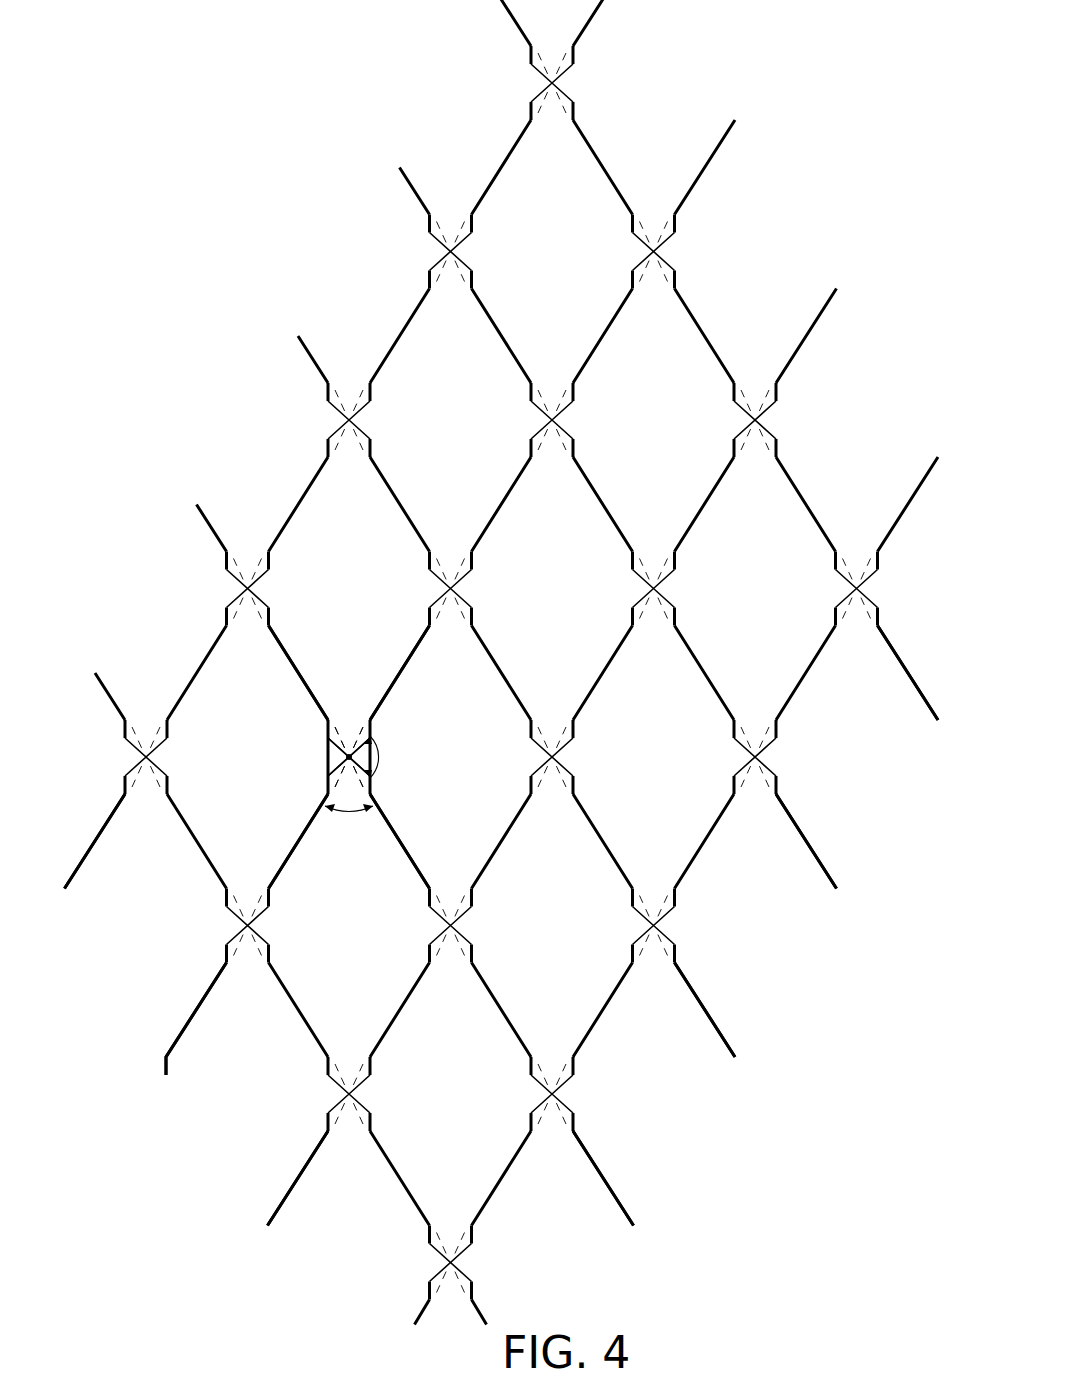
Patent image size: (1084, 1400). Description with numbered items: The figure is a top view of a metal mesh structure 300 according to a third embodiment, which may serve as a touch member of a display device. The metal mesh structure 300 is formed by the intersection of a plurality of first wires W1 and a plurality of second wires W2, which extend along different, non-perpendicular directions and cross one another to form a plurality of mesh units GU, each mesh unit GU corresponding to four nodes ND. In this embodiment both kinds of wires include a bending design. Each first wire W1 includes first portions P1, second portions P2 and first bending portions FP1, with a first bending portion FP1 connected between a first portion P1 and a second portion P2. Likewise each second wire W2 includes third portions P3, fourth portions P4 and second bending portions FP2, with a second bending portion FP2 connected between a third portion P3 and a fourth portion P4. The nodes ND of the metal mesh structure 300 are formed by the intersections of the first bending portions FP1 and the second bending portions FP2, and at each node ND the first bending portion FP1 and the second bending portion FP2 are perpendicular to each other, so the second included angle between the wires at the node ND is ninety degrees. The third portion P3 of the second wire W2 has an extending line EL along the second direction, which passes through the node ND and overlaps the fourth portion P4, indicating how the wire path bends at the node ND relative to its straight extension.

The metal mesh structure 300 is at (765, 128).
The mesh unit GU is at (574, 221).
The first wire W1 is at (114, 811).
The second wire W2 is at (889, 643).
The first portion P1 is at (302, 843).
The second portion P2 is at (402, 678).
The third portion P3 is at (405, 836).
The fourth portion P4 is at (300, 680).
The node ND is at (349, 754).
The extending line EL is at (363, 733).
The first bending portion FP1 is at (343, 763).
The second bending portion FP2 is at (375, 789).